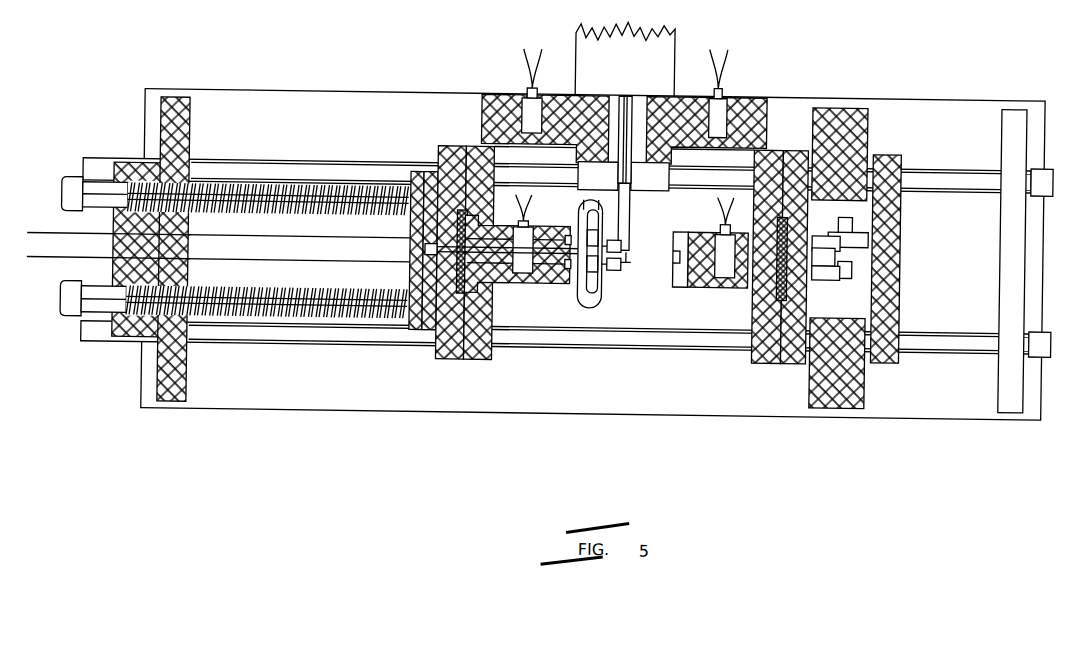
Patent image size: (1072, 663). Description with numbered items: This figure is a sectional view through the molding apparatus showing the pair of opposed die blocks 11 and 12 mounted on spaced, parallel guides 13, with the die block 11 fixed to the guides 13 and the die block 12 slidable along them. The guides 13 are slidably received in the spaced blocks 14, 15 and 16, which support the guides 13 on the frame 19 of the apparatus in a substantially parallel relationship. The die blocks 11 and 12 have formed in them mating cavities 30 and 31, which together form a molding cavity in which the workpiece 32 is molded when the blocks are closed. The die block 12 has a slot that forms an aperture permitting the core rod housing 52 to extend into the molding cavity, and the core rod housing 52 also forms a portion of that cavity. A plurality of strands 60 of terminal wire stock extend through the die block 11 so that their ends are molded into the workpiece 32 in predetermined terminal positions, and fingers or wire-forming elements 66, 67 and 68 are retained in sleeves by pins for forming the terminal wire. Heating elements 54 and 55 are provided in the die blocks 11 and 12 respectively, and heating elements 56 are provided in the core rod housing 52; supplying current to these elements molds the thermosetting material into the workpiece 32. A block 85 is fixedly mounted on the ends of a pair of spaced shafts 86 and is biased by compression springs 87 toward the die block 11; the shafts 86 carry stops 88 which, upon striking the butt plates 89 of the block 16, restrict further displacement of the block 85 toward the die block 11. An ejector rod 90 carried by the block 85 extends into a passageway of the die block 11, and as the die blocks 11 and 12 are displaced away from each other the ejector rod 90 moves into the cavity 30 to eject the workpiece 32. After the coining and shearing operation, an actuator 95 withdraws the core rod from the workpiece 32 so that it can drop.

The die block 11 is at (521, 285).
The die block 12 is at (704, 288).
The guides 13 is at (938, 170).
The block 14 is at (1018, 105).
The block 15 is at (845, 105).
The block 16 is at (177, 103).
The frame 19 is at (920, 414).
The cavity 30 is at (563, 285).
The cavity 31 is at (675, 262).
The workpiece 32 is at (630, 260).
The core rod housing 52 is at (632, 212).
The heating element 54 is at (530, 226).
The heating element 55 is at (722, 233).
The heating elements 56 is at (540, 99).
The strands of terminal wire stock 60 is at (337, 243).
The wire-forming element 66 is at (580, 304).
The wire-forming element 67 is at (600, 272).
The wire-forming element 68 is at (590, 203).
The block 85 is at (410, 272).
The shafts 86 is at (231, 218).
The compression springs 87 is at (270, 218).
The stops 88 is at (68, 184).
The butt plates 89 is at (113, 229).
The ejector rod 90 is at (425, 250).
The actuator 95 is at (672, 38).